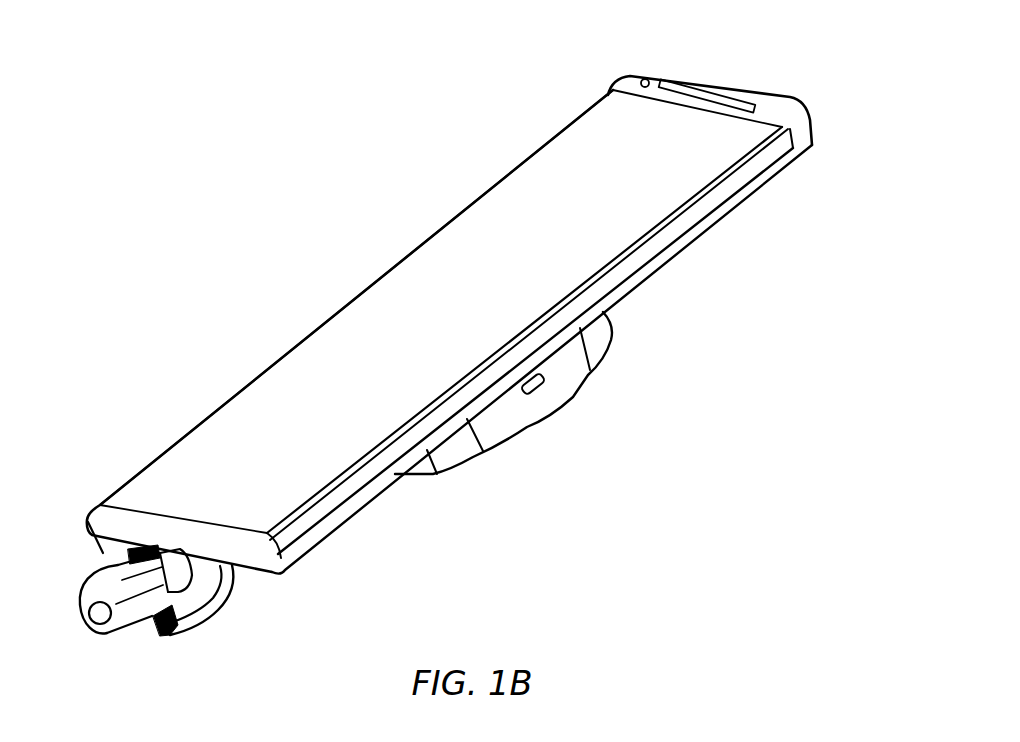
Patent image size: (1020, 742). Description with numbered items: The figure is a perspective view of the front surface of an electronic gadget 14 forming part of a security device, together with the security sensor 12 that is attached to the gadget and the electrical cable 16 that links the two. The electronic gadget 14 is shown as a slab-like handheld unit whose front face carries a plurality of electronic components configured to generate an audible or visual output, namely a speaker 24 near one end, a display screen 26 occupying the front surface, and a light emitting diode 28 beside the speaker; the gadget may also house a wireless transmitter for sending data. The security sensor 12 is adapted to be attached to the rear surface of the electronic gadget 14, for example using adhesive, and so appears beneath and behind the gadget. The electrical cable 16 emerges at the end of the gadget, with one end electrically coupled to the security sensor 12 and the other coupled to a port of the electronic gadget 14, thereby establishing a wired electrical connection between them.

The security sensor 12 is at (572, 396).
The electronic gadget 14 is at (387, 273).
The electrical cable 16 is at (217, 618).
The speaker 24 is at (737, 100).
The display screen 26 is at (480, 213).
The light emitting diode (LED) 28 is at (660, 77).